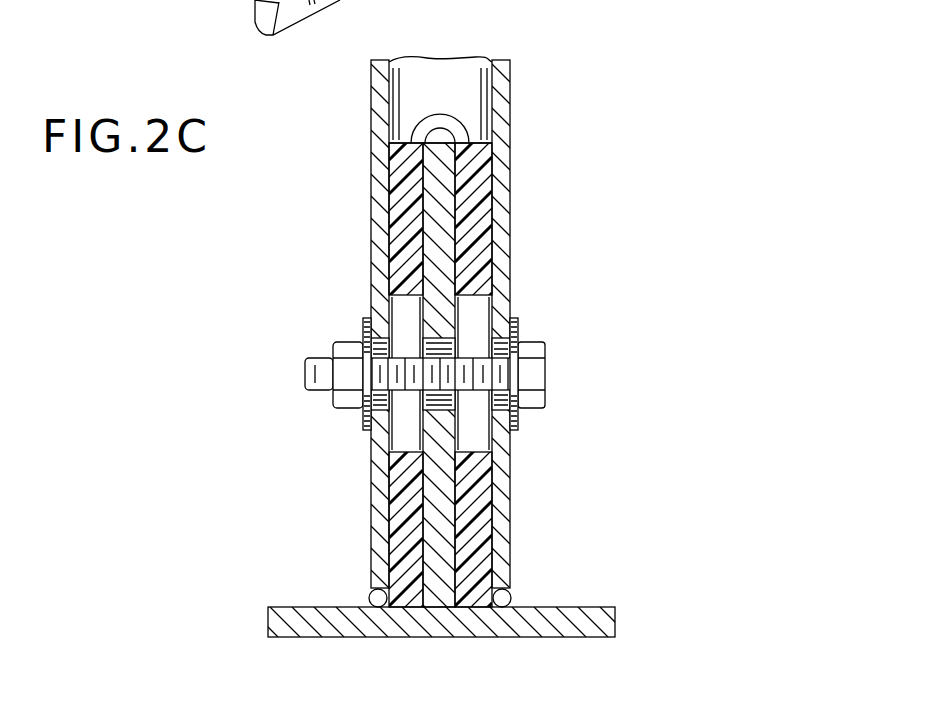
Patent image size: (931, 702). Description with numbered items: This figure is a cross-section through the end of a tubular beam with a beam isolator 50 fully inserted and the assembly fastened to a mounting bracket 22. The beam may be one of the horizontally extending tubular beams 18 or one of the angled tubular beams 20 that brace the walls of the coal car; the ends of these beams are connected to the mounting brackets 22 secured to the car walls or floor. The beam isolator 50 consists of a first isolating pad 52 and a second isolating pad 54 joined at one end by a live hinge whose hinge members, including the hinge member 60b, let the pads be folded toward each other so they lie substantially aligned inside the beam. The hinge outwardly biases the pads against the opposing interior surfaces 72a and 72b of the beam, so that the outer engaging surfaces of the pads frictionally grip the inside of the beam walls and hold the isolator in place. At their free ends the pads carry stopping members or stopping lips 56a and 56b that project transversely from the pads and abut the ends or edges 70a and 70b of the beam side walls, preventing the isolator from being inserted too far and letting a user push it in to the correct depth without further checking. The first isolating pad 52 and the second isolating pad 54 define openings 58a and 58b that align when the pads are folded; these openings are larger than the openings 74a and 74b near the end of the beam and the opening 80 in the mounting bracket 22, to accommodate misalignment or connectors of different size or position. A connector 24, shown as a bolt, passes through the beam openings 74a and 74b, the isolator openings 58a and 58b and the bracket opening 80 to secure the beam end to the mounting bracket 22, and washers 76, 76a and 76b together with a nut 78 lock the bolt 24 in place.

The tubular beam 18 is at (515, 315).
The angled tubular beam 20 is at (510, 100).
The mounting bracket 22 is at (440, 198).
The connector 24 is at (455, 398).
The beam isolator 50 is at (436, 212).
The first isolating pad 52 is at (394, 225).
The second isolating pad 54 is at (486, 242).
The stopping member 56a is at (369, 600).
The stopping member 56b is at (512, 600).
The opening 58a is at (396, 308).
The opening 58b is at (478, 313).
The hinge member 60b is at (443, 120).
The end of beam side wall 70a is at (388, 607).
The end of beam side wall 70b is at (495, 607).
The interior surface 72a is at (391, 562).
The interior surface 72b is at (491, 571).
The opening 74a is at (382, 336).
The opening 74b is at (502, 336).
The washer 76 is at (358, 324).
The washer 76a is at (518, 431).
The washer 76b is at (363, 431).
The nut 78 is at (351, 408).
The opening 80 is at (437, 402).